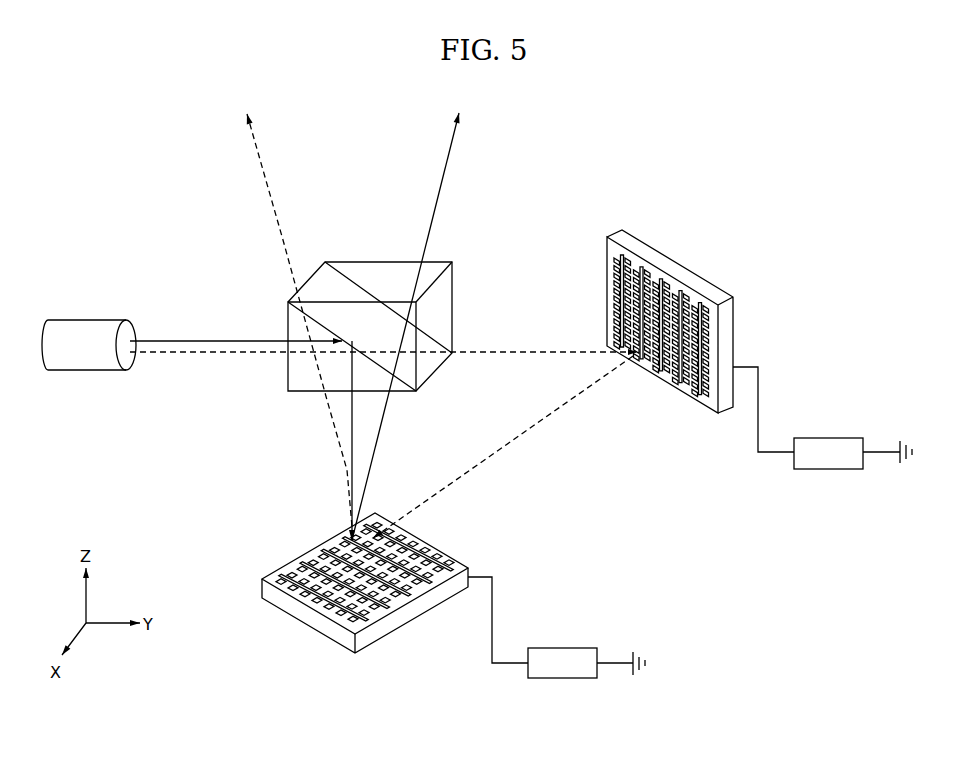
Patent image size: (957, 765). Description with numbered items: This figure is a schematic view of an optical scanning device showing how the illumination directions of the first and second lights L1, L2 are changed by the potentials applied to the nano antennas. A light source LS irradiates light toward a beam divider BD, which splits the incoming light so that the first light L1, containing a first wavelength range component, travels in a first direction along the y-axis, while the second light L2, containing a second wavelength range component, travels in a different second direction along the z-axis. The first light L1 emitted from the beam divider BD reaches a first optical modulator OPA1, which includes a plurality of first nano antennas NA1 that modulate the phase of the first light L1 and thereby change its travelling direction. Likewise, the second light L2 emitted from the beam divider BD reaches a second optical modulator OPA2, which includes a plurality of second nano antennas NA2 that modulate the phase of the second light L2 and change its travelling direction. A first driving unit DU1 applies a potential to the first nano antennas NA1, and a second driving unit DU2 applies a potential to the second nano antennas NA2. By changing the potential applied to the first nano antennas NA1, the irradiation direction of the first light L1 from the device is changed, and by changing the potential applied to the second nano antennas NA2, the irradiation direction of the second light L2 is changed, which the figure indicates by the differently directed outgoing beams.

The light source LS is at (73, 320).
The first light L1 is at (233, 354).
The second light L2 is at (210, 338).
The beam divider BD is at (367, 262).
The first optical modulator OPA1 is at (675, 323).
The first nano antennas NA1 is at (702, 398).
The first driving unit DU1 is at (827, 438).
The second optical modulator OPA2 is at (346, 583).
The second nano antennas NA2 is at (448, 560).
The second driving unit DU2 is at (565, 648).